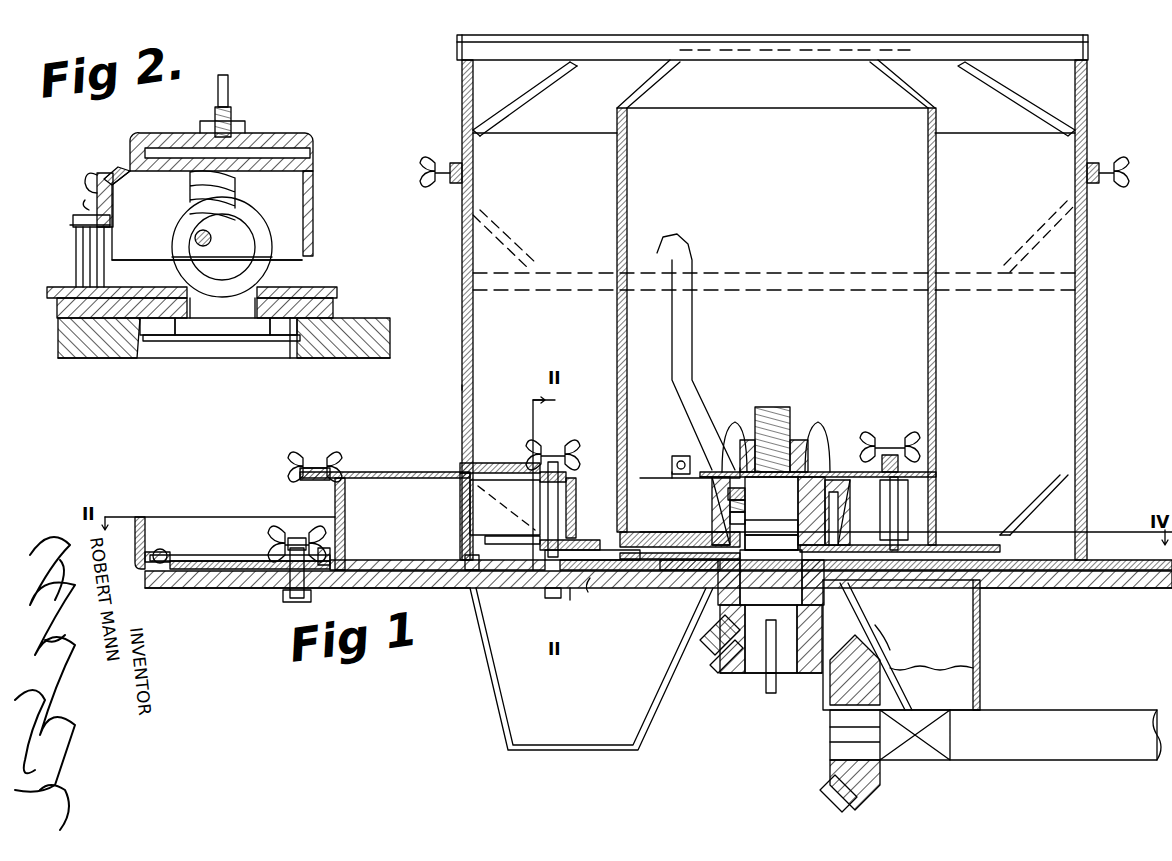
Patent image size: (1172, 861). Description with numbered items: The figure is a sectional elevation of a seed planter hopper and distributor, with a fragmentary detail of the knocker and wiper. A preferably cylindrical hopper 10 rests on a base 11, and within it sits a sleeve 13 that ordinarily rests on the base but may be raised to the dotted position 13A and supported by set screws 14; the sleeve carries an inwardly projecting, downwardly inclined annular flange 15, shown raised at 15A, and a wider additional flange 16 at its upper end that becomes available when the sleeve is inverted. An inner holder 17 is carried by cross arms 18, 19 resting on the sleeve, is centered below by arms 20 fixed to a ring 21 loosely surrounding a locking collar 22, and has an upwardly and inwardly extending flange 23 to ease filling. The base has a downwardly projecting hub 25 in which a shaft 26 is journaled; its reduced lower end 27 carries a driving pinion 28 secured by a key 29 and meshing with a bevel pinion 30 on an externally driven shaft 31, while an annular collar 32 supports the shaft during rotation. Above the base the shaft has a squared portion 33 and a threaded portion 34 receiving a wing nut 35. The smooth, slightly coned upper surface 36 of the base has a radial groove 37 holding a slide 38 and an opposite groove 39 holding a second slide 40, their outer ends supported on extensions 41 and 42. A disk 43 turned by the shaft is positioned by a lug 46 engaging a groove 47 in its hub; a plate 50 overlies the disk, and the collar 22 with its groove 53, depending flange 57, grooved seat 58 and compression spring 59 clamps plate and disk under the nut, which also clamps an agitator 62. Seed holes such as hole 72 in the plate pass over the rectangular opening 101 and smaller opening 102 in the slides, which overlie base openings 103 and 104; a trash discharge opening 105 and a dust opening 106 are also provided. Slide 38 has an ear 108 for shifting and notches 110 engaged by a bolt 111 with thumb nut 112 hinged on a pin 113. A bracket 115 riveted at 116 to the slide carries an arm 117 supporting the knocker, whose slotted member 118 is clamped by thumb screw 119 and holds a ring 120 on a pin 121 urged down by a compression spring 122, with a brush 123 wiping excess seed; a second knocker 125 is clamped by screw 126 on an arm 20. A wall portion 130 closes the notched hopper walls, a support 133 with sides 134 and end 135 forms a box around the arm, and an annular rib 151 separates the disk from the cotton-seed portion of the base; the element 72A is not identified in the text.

In FIG. 1, the hopper 10 is at (462, 388).
In FIG. 1, the base 11 is at (625, 590).
In FIG. 1, the sleeve 13 is at (473, 335).
In FIG. 1, the raised position of sleeve 13A is at (968, 288).
In FIG. 1, the set screws 14 is at (440, 185).
In FIG. 1, the annular flange 15 is at (1052, 490).
In FIG. 1, the raised position of annular flange 15A is at (1045, 228).
In FIG. 1, the additional flange 16 is at (530, 97).
In FIG. 1, the inner hopper or holder 17 is at (627, 205).
In FIG. 1, the cross arm 18 is at (722, 50).
In FIG. 1, the cross arm 19 is at (778, 60).
In FIG. 1, the arms 20 is at (697, 456).
In FIG. 1, the ring 21 is at (700, 478).
In FIG. 1, the locking collar 22 is at (710, 508).
In FIG. 1, the flange 23 is at (905, 90).
In FIG. 1, the hub 25 is at (740, 578).
In FIG. 1, the shaft 26 is at (745, 595).
In FIG. 1, the lower end of shaft 27 is at (785, 712).
In FIG. 1, the driving pinion 28 is at (715, 670).
In FIG. 1, the key 29 is at (768, 680).
In FIG. 1, the bevel pinion 30 is at (825, 775).
In FIG. 1, the shaft 31 is at (970, 760).
In FIG. 1, the annular collar 32 is at (771, 605).
In FIG. 1, the squared portion 33 is at (773, 540).
In FIG. 1, the threaded portion 34 is at (773, 407).
In FIG. 1, the nut 35 is at (815, 432).
In FIG. 2, the upper surface of base 36 is at (345, 332).
In FIG. 1, the radial groove 37 is at (650, 575).
In FIG. 2, the slide 38 is at (330, 305).
In FIG. 1, the slide 38 is at (385, 548).
In FIG. 1, the second groove 39 is at (780, 580).
In FIG. 1, the second slide 40 is at (875, 585).
In FIG. 1, the base extension 41 is at (340, 588).
In FIG. 1, the base extension 42 is at (1120, 588).
In FIG. 1, the disk 43 is at (573, 540).
In FIG. 1, the lug 46 is at (745, 507).
In FIG. 1, the groove 47 is at (745, 530).
In FIG. 2, the plate 50 is at (290, 287).
In FIG. 1, the groove 53 is at (745, 495).
In FIG. 1, the depending flange 57 is at (838, 520).
In FIG. 1, the groove 58 is at (820, 470).
In FIG. 1, the compression spring 59 is at (840, 505).
In FIG. 1, the agitator 62 is at (692, 355).
In FIG. 2, the hole 72 is at (210, 318).
In FIG. 1, the hole 72 is at (573, 510).
In FIG. 2, the slot 72A is at (225, 333).
In FIG. 1, the slot 72A is at (565, 588).
In FIG. 2, the rectangular opening 101 is at (265, 330).
In FIG. 1, the rectangular opening 101 is at (545, 588).
In FIG. 1, the opening 102 is at (880, 605).
In FIG. 2, the base opening 103 is at (215, 350).
In FIG. 1, the base opening 103 is at (605, 587).
In FIG. 1, the base opening 104 is at (906, 636).
In FIG. 1, the trash discharge opening 105 is at (700, 573).
In FIG. 2, the dust or trash opening 106 is at (296, 330).
In FIG. 1, the ear 108 is at (145, 535).
In FIG. 1, the notches 110 is at (210, 570).
In FIG. 1, the bolt 111 is at (290, 593).
In FIG. 1, the thumb nut 112 is at (275, 537).
In FIG. 1, the pin 113 is at (283, 598).
In FIG. 1, the bracket 115 is at (345, 503).
In FIG. 1, the rivets 116 is at (160, 572).
In FIG. 2, the arm 117 is at (305, 155).
In FIG. 1, the arm 117 is at (380, 472).
In FIG. 2, the slotted member 118 is at (300, 200).
In FIG. 1, the slotted member 118 is at (576, 490).
In FIG. 2, the thumb screw 119 is at (232, 105).
In FIG. 1, the thumb screw 119 is at (558, 440).
In FIG. 2, the ring 120 is at (190, 222).
In FIG. 2, the pin 121 is at (195, 238).
In FIG. 2, the compression spring 122 is at (236, 190).
In FIG. 2, the brush or wiper 123 is at (78, 200).
In FIG. 1, the knocker 125 is at (898, 497).
In FIG. 1, the screw 126 is at (888, 444).
In FIG. 1, the wall portion 130 is at (460, 490).
In FIG. 1, the support 133 is at (535, 445).
In FIG. 1, the sides 134 is at (470, 512).
In FIG. 1, the end 135 is at (530, 528).
In FIG. 1, the annular rib 151 is at (478, 588).